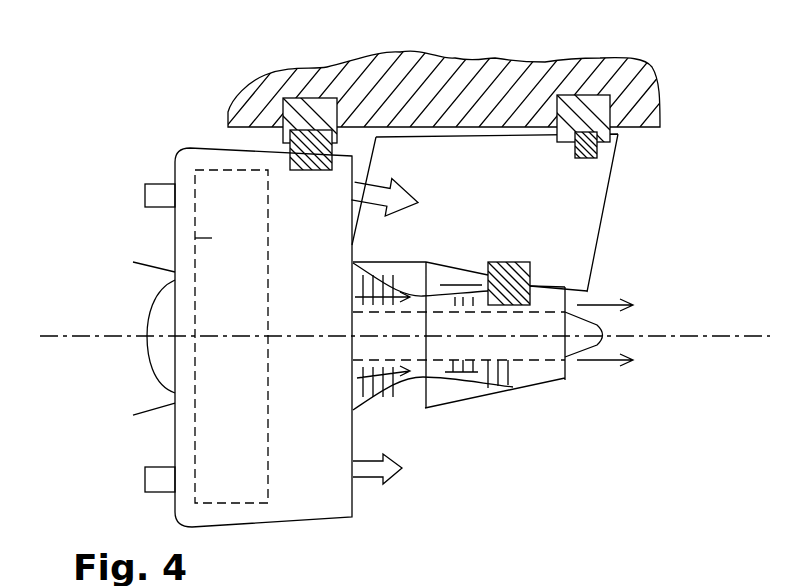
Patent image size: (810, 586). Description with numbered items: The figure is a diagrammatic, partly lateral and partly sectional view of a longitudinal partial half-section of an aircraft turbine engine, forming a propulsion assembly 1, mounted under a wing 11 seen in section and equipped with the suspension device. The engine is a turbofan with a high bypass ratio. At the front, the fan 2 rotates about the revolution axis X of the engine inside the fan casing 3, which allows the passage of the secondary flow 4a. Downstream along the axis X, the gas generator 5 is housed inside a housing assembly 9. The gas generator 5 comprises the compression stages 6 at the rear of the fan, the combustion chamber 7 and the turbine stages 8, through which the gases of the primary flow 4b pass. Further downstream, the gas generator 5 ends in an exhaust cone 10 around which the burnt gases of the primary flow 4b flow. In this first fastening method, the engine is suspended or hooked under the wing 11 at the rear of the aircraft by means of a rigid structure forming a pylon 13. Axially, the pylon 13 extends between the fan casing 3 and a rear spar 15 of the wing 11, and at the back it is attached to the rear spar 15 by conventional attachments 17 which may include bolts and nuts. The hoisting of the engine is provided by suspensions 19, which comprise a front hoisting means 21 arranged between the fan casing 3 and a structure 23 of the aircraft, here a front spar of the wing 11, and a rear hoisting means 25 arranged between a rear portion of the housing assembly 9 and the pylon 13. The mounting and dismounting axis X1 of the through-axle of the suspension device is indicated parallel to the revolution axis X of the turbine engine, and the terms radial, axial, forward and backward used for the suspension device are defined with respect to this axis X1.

The propulsion assembly 1 is at (662, 233).
The fan 2 is at (185, 237).
The fan casing 3 is at (185, 167).
The secondary flow 4a is at (160, 475).
The primary flow 4b is at (388, 293).
The gas generator 5 is at (444, 415).
The compression stages 6 is at (386, 385).
The combustion chamber 7 is at (447, 372).
The turbine stages 8 is at (533, 370).
The housing assembly 9 is at (495, 395).
The exhaust cone 10 is at (608, 327).
The wing 11 is at (460, 97).
The pylon 13 is at (577, 183).
The rear spar 15 is at (585, 107).
The attachments 17 is at (590, 158).
The suspensions 19 is at (278, 110).
The front hoisting means 21 is at (286, 160).
The structure of the aircraft 23 is at (313, 113).
The rear hoisting means 25 is at (535, 258).
The revolution axis of the turbine engine X is at (703, 333).
The axis of mounting/dismounting of the through-axle X1 is at (597, 287).